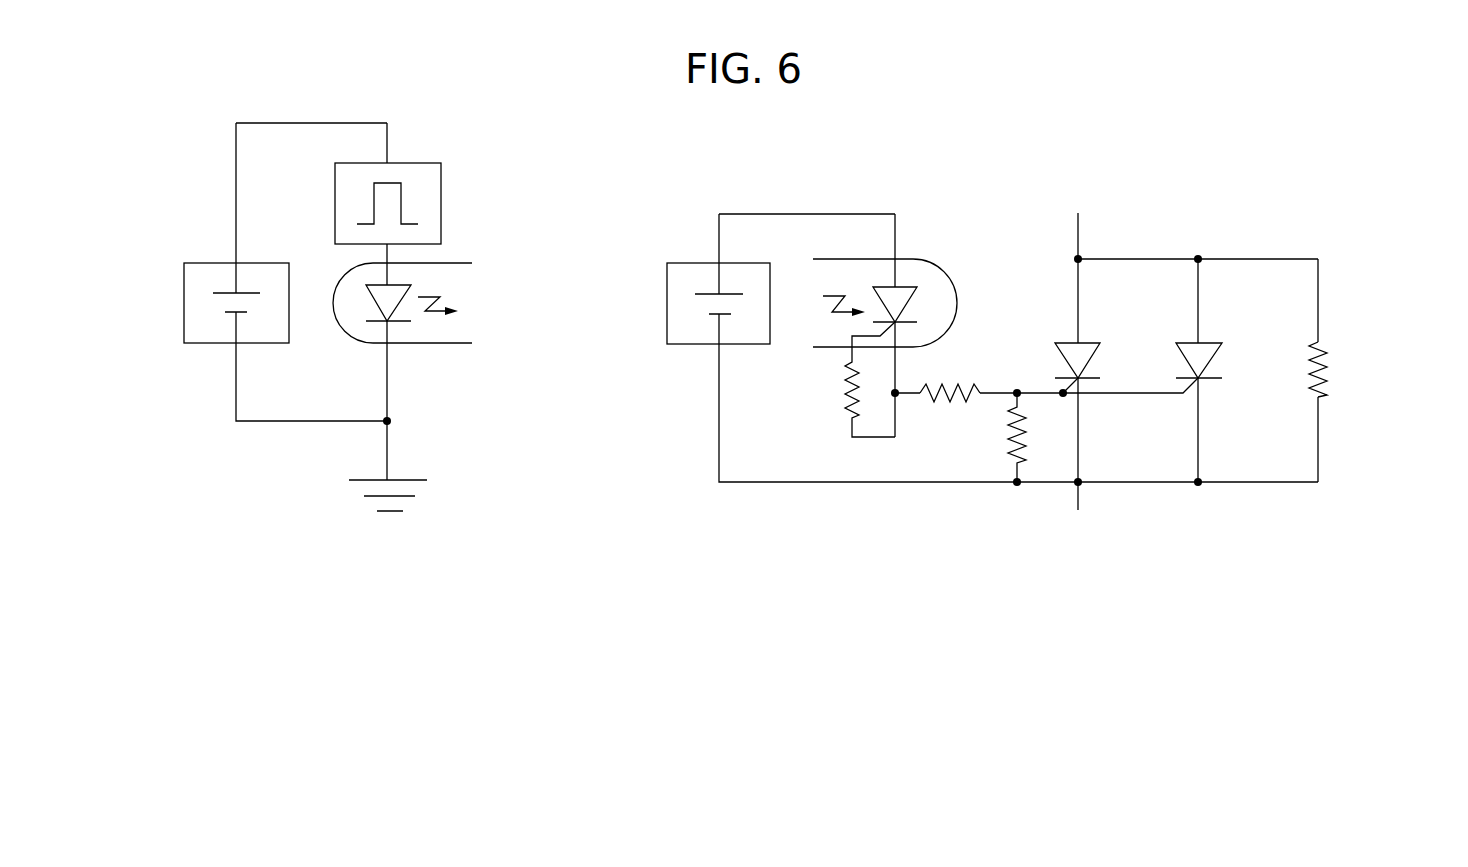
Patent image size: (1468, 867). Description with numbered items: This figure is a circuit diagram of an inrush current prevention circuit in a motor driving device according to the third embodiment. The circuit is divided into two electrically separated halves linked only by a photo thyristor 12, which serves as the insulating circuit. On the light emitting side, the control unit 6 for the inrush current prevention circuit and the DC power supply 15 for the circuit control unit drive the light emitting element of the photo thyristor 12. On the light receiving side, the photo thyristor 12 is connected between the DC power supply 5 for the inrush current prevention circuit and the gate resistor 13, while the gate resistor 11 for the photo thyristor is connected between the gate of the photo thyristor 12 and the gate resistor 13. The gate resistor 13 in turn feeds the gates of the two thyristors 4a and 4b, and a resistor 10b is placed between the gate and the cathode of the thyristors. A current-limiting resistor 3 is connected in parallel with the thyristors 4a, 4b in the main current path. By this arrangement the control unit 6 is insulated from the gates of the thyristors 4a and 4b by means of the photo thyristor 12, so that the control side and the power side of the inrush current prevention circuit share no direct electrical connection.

The current-limiting resistor 3 is at (1330, 363).
The thyristor 4a is at (1208, 338).
The thyristor 4b is at (1090, 338).
The DC power supply for the inrush current prevention circuit 5 is at (667, 305).
The control unit for the inrush current prevention circuit 6 is at (441, 200).
The resistor between the gate and the cathode 10b is at (1012, 447).
The gate resistor for the photo thyristor 11 is at (847, 388).
The photo thyristor 12 is at (432, 343).
The gate resistor 13 is at (950, 387).
The DC power supply for the circuit control unit 15 is at (183, 303).